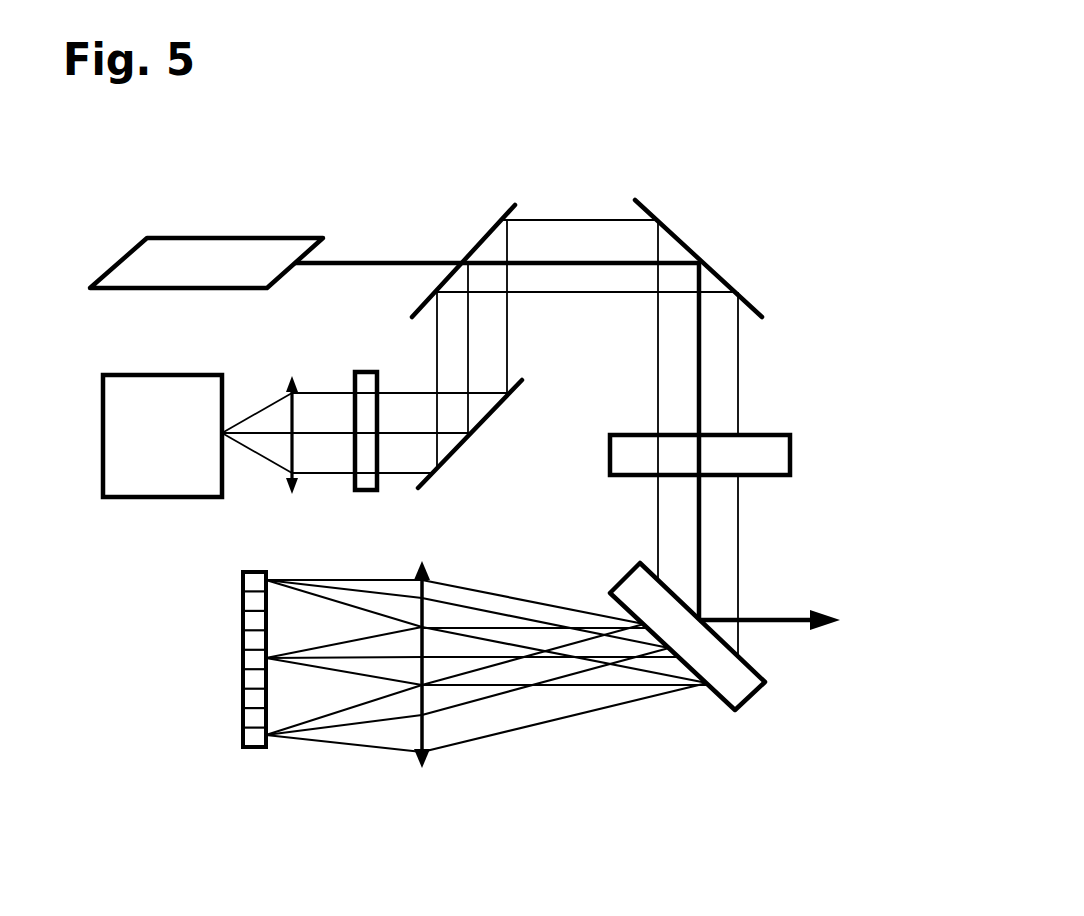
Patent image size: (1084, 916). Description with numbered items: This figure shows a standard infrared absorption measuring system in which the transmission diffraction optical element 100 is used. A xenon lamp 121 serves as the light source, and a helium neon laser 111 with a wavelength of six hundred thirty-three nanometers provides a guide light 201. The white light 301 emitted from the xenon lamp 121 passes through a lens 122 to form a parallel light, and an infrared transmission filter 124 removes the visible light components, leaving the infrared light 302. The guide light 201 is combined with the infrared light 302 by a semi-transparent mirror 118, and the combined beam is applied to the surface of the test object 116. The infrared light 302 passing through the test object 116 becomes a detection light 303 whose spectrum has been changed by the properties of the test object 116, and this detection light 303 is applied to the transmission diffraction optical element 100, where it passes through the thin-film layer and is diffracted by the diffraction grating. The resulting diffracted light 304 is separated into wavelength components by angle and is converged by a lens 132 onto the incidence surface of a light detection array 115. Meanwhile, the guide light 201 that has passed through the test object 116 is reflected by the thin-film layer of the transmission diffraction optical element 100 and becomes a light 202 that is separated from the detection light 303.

The transmission diffraction optical element 100 is at (747, 682).
The helium neon laser 111 is at (218, 248).
The light detection array 115 is at (243, 735).
The test object 116 is at (767, 458).
The semi-transparent mirror 118 is at (493, 230).
The xenon lamp 121 is at (165, 482).
The lens 122 is at (294, 494).
The infrared transmission filter 124 is at (357, 377).
The lens 132 is at (427, 768).
The guide light 201 is at (370, 263).
The light 202 is at (793, 625).
The white light 301 is at (273, 438).
The infrared light 302 is at (727, 397).
The detection light 303 is at (723, 585).
The diffracted light 304 is at (560, 705).